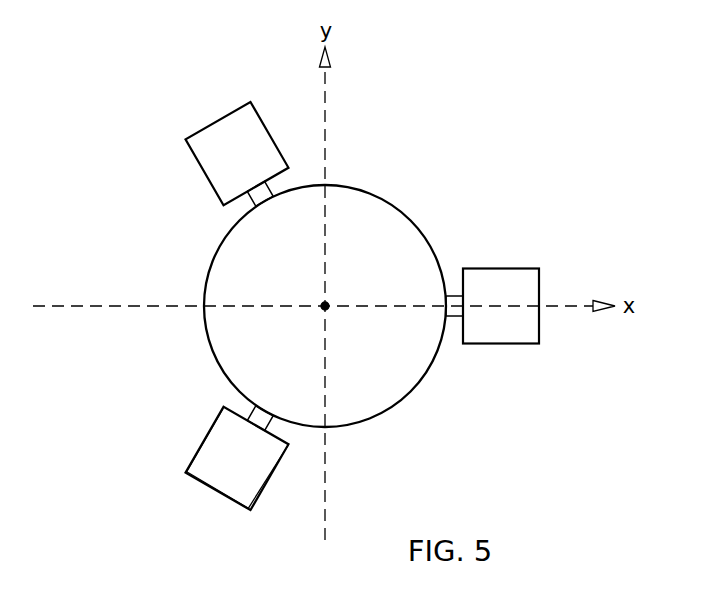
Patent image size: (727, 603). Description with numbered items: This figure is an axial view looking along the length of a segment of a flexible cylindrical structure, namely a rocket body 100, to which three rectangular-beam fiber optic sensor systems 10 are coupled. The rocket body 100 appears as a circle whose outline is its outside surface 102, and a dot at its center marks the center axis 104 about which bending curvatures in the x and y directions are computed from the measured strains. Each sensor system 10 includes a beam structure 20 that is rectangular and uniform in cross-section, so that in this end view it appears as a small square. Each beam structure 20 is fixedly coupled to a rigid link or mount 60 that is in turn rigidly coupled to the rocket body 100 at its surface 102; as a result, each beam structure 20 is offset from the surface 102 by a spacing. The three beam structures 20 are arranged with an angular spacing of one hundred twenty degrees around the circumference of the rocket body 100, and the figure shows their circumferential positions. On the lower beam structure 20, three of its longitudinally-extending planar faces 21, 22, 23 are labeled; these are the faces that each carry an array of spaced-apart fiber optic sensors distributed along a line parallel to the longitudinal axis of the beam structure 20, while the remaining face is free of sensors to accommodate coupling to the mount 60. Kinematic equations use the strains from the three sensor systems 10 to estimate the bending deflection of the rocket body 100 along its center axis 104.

The sensor system 10 is at (333, 316).
The beam structure 20 is at (520, 278).
The face 21 is at (213, 421).
The face 22 is at (200, 482).
The face 23 is at (262, 492).
The rigid link or mount 60 is at (447, 294).
The rocket body 100 is at (346, 266).
The outside surface 102 is at (410, 392).
The center axis 104 is at (325, 306).